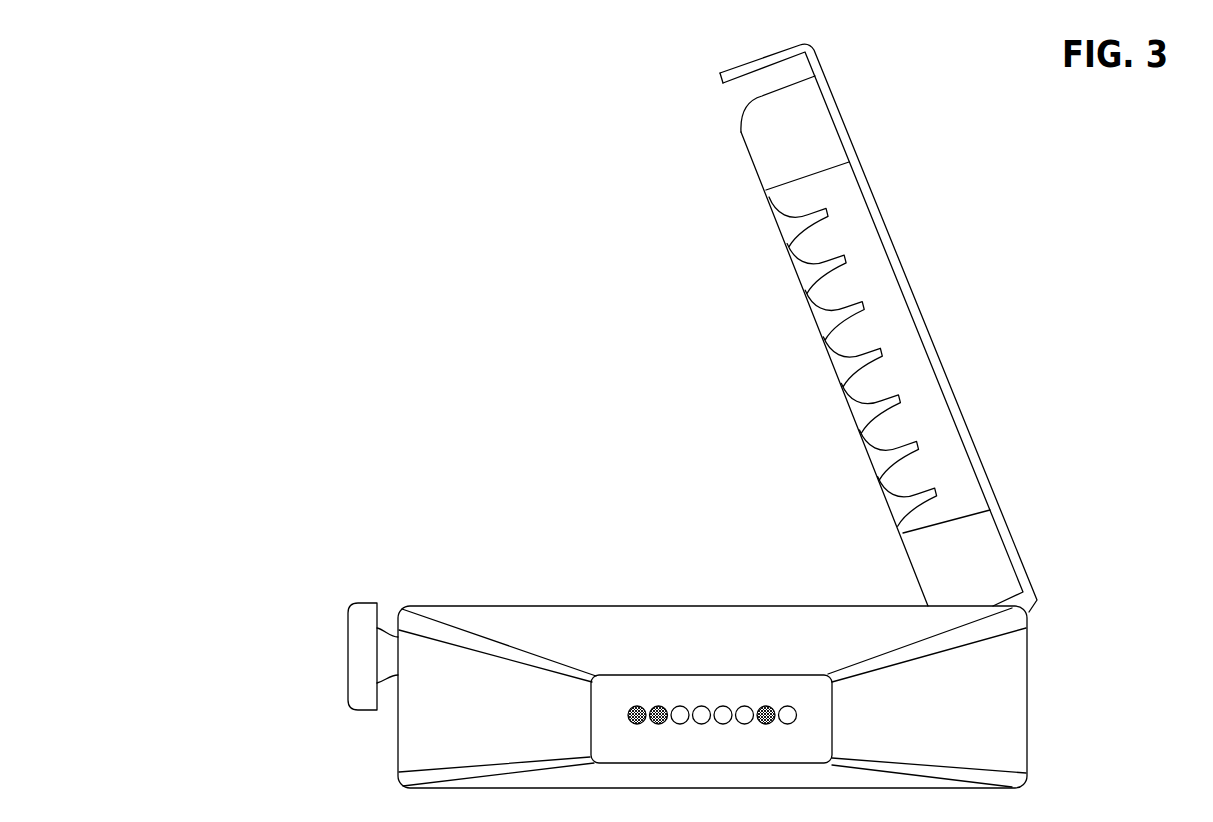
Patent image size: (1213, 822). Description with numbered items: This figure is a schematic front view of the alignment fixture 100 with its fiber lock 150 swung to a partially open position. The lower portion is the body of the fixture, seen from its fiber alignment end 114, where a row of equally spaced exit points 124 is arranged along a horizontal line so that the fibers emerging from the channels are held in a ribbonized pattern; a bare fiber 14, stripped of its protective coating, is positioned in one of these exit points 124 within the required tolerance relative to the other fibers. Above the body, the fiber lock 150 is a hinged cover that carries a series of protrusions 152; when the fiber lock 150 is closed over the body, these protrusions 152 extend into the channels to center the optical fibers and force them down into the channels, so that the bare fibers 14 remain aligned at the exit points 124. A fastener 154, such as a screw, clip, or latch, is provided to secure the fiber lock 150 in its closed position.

The alignment fixture 100 is at (297, 103).
The fiber lock 150 is at (938, 353).
The protrusions 152 is at (778, 194).
The fastener 154 is at (355, 637).
The fiber alignment end 114 is at (687, 681).
The exit point 124 is at (636, 708).
The bare fiber 14 is at (632, 708).